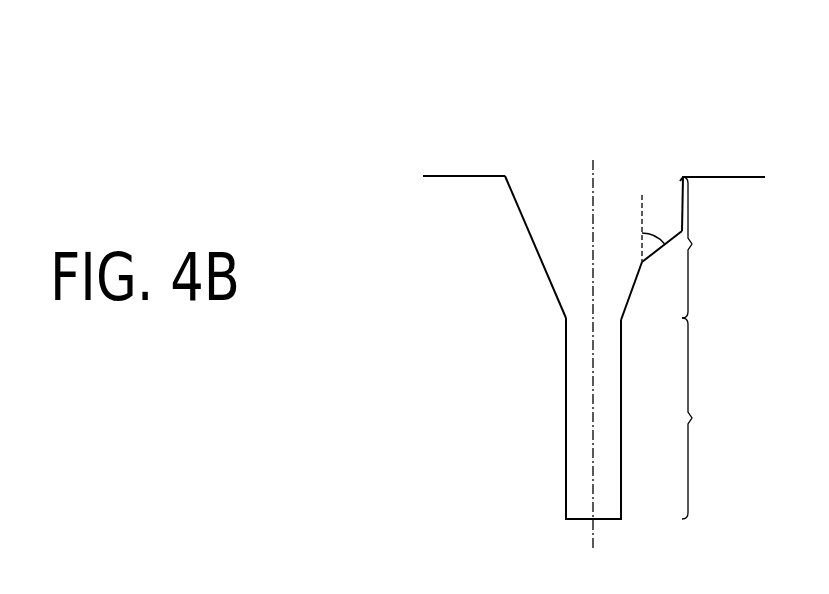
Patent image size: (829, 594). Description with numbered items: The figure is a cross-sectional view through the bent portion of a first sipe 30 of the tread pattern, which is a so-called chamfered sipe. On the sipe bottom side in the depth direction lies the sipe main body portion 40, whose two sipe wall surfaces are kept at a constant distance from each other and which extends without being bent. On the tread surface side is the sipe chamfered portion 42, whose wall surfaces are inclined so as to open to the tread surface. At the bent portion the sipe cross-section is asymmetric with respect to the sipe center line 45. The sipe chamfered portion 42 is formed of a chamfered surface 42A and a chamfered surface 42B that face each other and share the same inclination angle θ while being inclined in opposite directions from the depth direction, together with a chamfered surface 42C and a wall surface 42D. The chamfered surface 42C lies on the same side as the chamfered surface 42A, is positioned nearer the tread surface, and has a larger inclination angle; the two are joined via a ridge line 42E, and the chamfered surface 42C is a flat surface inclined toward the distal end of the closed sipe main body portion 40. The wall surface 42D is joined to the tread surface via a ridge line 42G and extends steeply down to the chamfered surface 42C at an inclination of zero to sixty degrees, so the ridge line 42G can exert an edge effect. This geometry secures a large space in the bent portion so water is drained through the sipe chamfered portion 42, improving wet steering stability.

The first sipe 30 is at (598, 105).
The sipe main body portion 40 is at (647, 418).
The sipe chamfered portion 42 is at (705, 247).
The chamfered surface 42A is at (637, 277).
The chamfered surface 42B is at (517, 198).
The chamfered surface 42C is at (681, 185).
The wall surface 42D is at (686, 197).
The ridge line 42E is at (640, 259).
The ridge line 42G is at (681, 176).
The sipe center line 45 is at (595, 372).